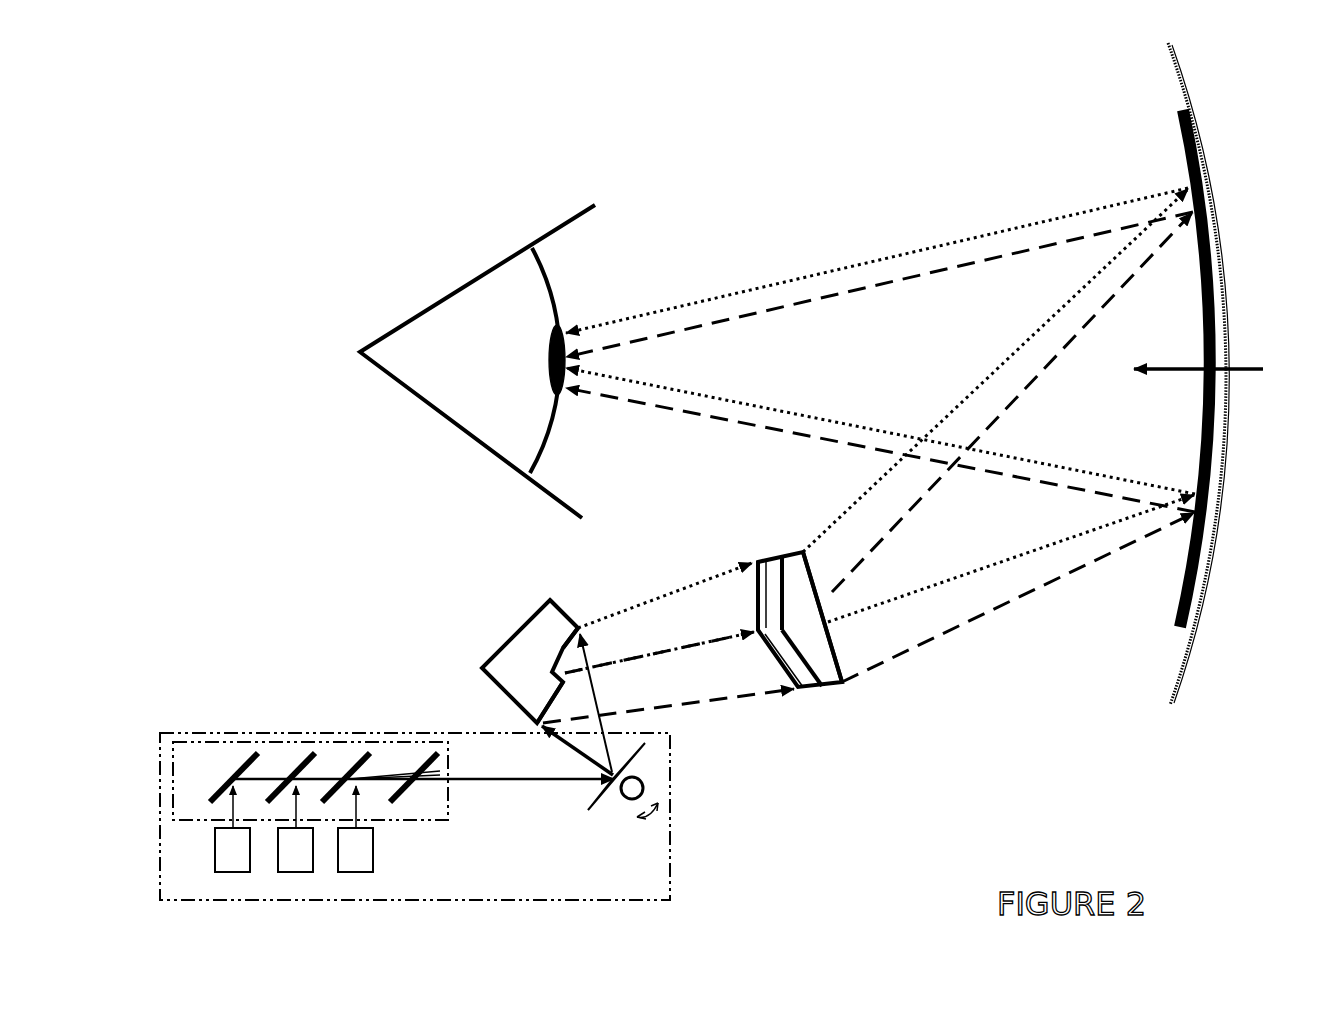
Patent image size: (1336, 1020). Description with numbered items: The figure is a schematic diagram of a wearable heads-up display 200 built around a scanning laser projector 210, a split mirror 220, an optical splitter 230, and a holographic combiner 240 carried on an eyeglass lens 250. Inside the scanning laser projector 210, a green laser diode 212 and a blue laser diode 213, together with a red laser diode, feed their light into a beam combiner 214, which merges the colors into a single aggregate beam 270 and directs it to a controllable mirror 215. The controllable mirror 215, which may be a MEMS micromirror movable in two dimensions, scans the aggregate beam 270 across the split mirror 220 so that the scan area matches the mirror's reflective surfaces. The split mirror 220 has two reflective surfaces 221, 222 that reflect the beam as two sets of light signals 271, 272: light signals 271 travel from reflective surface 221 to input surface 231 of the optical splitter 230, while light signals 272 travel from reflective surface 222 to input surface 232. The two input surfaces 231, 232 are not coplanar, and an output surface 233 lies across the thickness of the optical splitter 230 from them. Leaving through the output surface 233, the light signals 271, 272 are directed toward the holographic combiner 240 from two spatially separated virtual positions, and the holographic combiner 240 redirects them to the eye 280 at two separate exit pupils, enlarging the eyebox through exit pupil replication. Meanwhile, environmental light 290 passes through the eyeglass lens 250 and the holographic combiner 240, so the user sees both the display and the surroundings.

The wearable heads-up display 200 is at (240, 219).
The scanning laser projector 210 is at (205, 894).
The green laser diode 212 is at (232, 872).
The blue laser diode 213 is at (353, 872).
The beam combiner 214 is at (220, 769).
The controllable mirror 215 is at (613, 808).
The split mirror 220 is at (538, 606).
The reflective surface 221 is at (545, 707).
The reflective surface 222 is at (295, 872).
The optical splitter 230 is at (830, 690).
The input surface 231 is at (778, 658).
The input surface 232 is at (758, 595).
The output surface 233 is at (835, 640).
The holographic combiner 240 is at (1188, 172).
The eyeglass lens 250 is at (1177, 72).
The aggregate beam 270 is at (517, 780).
The light signals 271 is at (737, 423).
The light signals 272 is at (702, 300).
The eye 280 is at (1235, 363).
The environmental light 290 is at (440, 369).